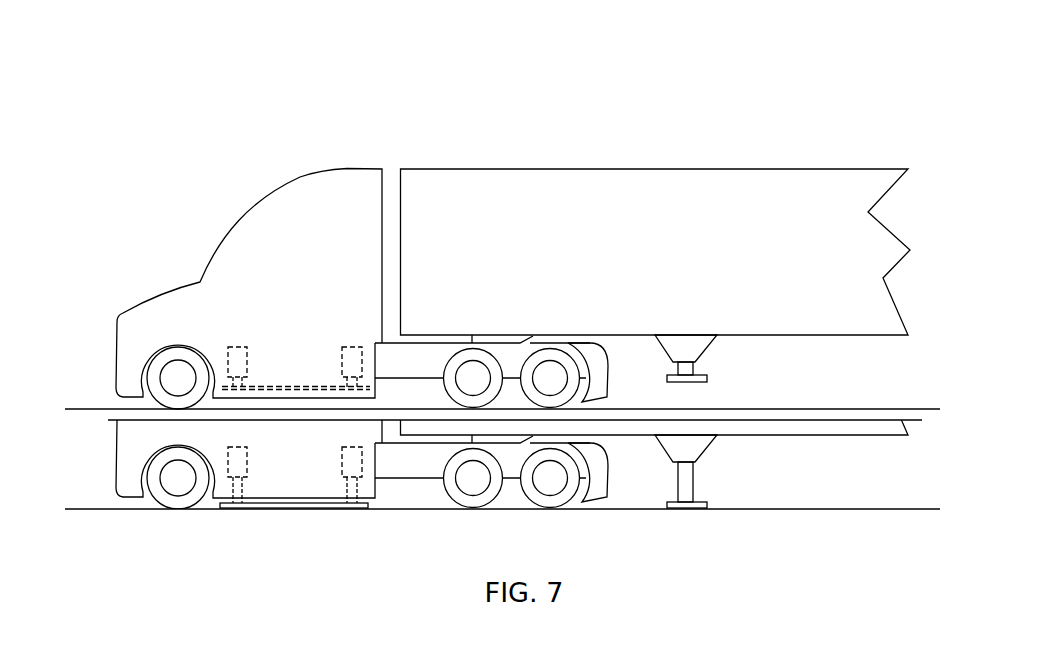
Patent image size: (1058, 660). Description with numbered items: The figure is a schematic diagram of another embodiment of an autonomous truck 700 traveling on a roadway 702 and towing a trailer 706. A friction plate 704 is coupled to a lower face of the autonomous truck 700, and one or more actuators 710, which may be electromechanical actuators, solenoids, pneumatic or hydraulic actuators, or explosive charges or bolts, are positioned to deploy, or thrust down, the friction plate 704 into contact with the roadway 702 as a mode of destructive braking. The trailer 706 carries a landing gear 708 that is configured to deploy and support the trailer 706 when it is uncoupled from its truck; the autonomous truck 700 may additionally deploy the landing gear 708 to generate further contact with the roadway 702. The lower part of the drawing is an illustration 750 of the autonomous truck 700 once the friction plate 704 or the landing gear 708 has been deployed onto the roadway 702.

The illustration 750 is at (892, 70).
The autonomous truck 700 is at (257, 205).
The roadway 702 is at (100, 408).
The friction plate 704 is at (327, 387).
The trailer 706 is at (602, 178).
The landing gear 708 is at (697, 367).
The actuators 710 is at (233, 345).